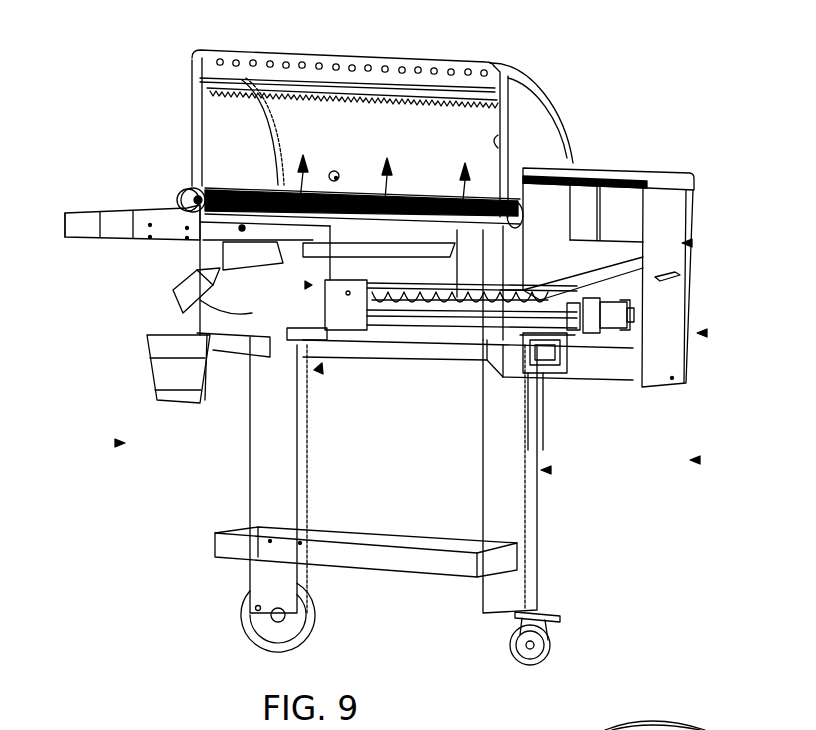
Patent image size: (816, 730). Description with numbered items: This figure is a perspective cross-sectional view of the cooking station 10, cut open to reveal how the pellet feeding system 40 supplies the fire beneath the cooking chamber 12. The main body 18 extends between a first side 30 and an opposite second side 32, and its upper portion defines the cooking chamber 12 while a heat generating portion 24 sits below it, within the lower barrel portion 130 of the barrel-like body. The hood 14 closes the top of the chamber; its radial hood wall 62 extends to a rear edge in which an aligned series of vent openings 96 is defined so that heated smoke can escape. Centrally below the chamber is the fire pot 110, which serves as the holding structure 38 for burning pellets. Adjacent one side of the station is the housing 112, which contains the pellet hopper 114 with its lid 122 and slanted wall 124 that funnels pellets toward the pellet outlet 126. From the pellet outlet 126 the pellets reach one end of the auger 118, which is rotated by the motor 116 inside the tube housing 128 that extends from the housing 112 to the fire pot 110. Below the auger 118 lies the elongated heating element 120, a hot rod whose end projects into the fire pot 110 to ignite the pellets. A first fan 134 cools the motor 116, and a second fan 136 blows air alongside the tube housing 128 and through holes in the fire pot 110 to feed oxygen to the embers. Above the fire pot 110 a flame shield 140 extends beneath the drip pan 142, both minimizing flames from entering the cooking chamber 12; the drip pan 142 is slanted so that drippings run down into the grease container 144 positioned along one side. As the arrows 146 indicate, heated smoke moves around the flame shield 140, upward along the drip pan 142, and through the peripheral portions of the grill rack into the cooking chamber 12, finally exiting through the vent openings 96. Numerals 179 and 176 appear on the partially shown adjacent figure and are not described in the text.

The cooking station 10 is at (676, 104).
The cooking chamber 12 is at (505, 143).
The vent openings 96 is at (277, 56).
The drip pan 142 is at (200, 178).
The flame shield 140 is at (362, 235).
The arrows 146 is at (298, 178).
The lower barrel portion 130 is at (215, 243).
The fire pot 110 is at (308, 285).
The holding structure 38 is at (300, 293).
The grease container 144 is at (148, 381).
The heating element 120 is at (350, 322).
The tube housing 128 is at (458, 300).
The auger 118 is at (432, 310).
The heat generating portion 24 is at (318, 368).
The pellet outlet 126 is at (600, 300).
The first fan 134 is at (630, 330).
The motor 116 is at (590, 348).
The second fan 136 is at (567, 355).
The lid 122 is at (680, 168).
The pellet hopper 114 is at (672, 208).
The housing 112 is at (690, 243).
The slanted wall 124 is at (633, 265).
The pellet feeding system 40 is at (705, 333).
The main body 18 is at (549, 470).
The first side 30 is at (698, 460).
The second side 32 is at (117, 443).
The partial element 179 is at (683, 729).
The partial element 176 is at (716, 729).
The hood 14 is at (743, 729).
The radial hood wall 62 is at (762, 729).